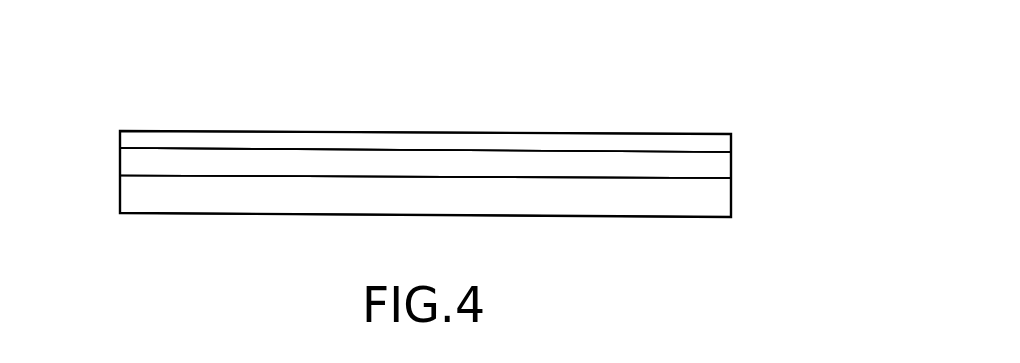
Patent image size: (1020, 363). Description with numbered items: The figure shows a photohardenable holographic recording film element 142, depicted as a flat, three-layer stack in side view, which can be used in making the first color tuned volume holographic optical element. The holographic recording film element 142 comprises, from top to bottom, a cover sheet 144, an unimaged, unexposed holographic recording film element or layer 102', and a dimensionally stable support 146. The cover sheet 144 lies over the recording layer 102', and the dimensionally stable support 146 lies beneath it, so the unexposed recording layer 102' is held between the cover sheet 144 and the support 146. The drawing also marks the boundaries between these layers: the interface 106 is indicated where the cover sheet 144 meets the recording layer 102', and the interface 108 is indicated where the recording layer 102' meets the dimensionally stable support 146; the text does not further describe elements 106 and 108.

The holographic recording film element 142 is at (647, 113).
The cover sheet 144 is at (731, 143).
The unimaged, unexposed holographic recording film layer 102' is at (460, 163).
The dimensionally stable support 146 is at (731, 197).
The first interface surface 106 is at (147, 146).
The second interface surface 108 is at (142, 176).